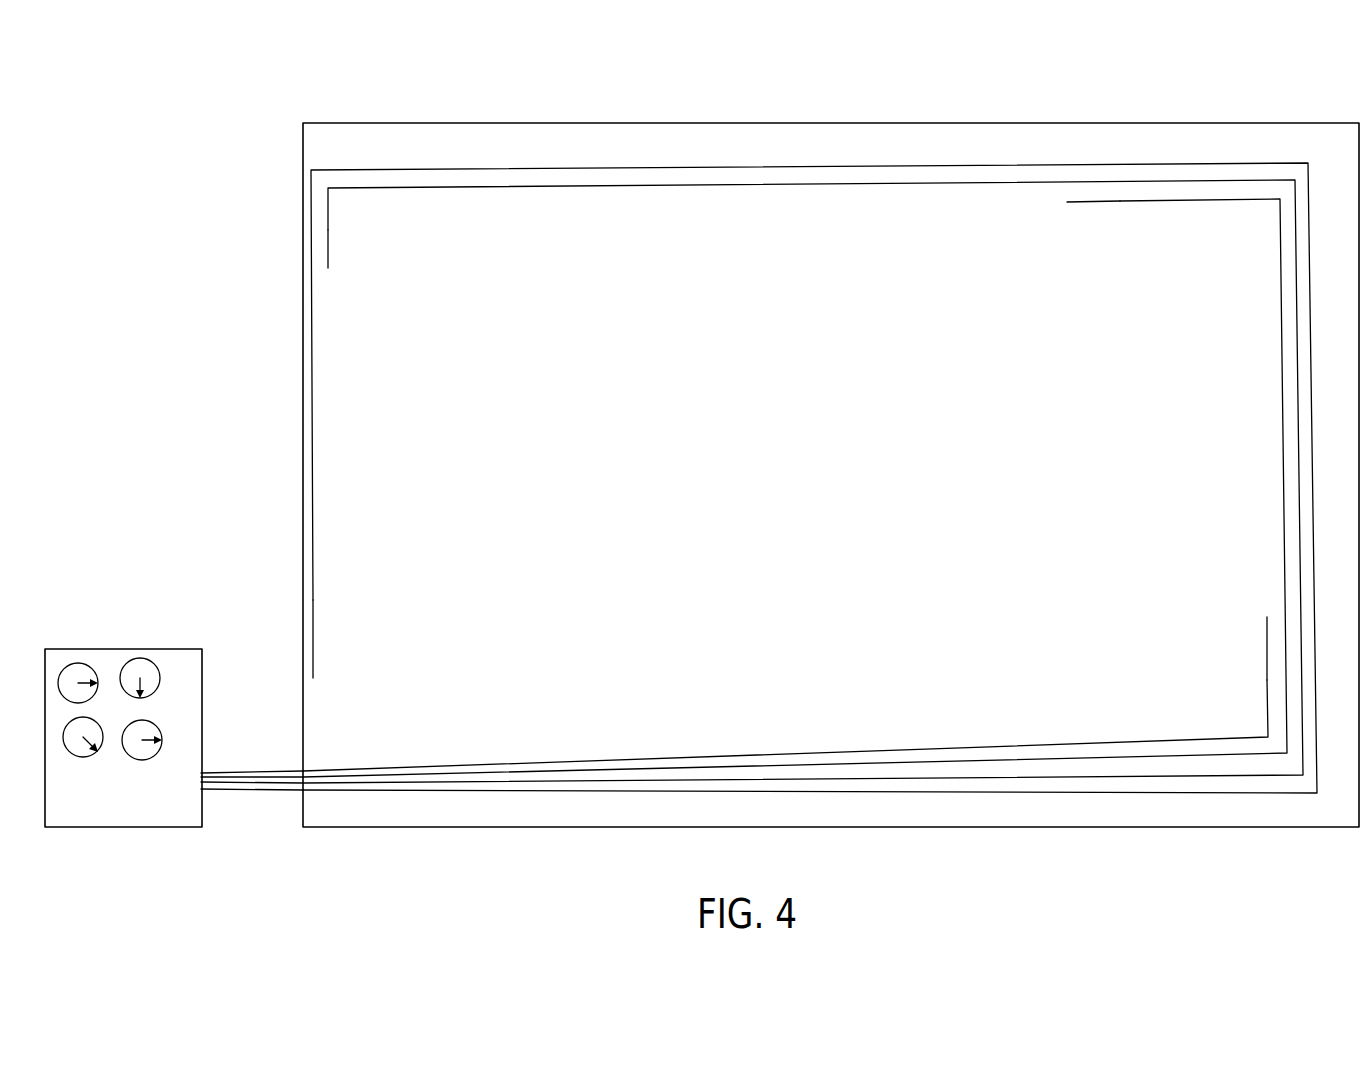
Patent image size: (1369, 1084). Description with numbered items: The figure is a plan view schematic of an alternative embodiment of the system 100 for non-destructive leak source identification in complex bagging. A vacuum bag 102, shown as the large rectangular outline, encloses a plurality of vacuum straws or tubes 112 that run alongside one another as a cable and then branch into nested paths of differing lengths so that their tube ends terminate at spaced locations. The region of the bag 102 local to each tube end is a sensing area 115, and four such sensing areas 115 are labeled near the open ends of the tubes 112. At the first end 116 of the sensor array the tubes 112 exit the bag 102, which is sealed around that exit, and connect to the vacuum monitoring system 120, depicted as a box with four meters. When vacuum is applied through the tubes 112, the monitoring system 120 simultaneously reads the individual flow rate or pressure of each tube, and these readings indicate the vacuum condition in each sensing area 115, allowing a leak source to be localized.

The system 100 is at (203, 144).
The vacuum bag 102 is at (537, 828).
The vacuum straws or tubes 112 is at (807, 752).
The sensing area 115 is at (345, 267).
The first end of sensor array 116 is at (303, 772).
The vacuum monitoring system 120 is at (149, 811).